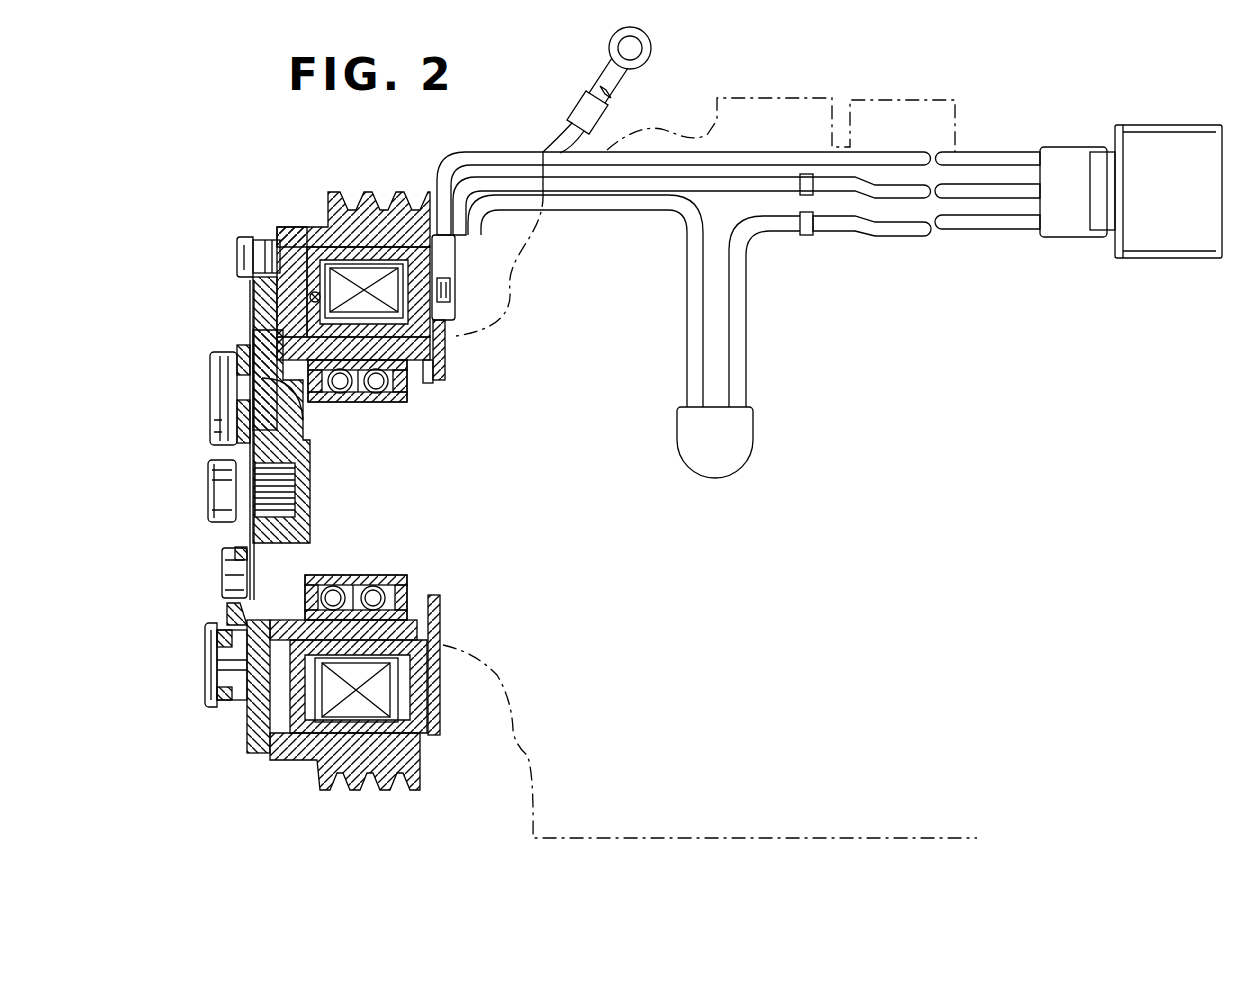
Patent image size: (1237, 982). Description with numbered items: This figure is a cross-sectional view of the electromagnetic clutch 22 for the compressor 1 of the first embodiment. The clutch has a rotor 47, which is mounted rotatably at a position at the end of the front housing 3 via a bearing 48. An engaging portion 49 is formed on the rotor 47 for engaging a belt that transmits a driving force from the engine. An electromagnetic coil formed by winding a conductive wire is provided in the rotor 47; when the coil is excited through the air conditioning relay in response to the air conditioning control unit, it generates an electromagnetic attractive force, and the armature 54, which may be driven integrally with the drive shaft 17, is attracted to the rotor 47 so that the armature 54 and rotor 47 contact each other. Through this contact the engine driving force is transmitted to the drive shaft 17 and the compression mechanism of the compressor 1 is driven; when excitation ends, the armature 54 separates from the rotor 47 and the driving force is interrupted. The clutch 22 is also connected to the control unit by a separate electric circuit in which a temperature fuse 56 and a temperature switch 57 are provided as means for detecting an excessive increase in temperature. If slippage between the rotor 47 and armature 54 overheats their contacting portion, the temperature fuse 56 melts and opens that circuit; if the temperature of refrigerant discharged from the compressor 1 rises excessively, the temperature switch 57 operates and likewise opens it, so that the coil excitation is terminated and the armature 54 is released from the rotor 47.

The compressor 1 is at (747, 780).
The front housing 3 is at (237, 383).
The drive shaft 17 is at (260, 483).
The electromagnetic clutch 22 is at (366, 792).
The rotor 47 is at (297, 764).
The bearing 48 is at (380, 400).
The engaging portion 49 is at (363, 200).
The armature 54 is at (252, 733).
The temperature fuse 56 is at (317, 292).
The temperature switch 57 is at (740, 437).